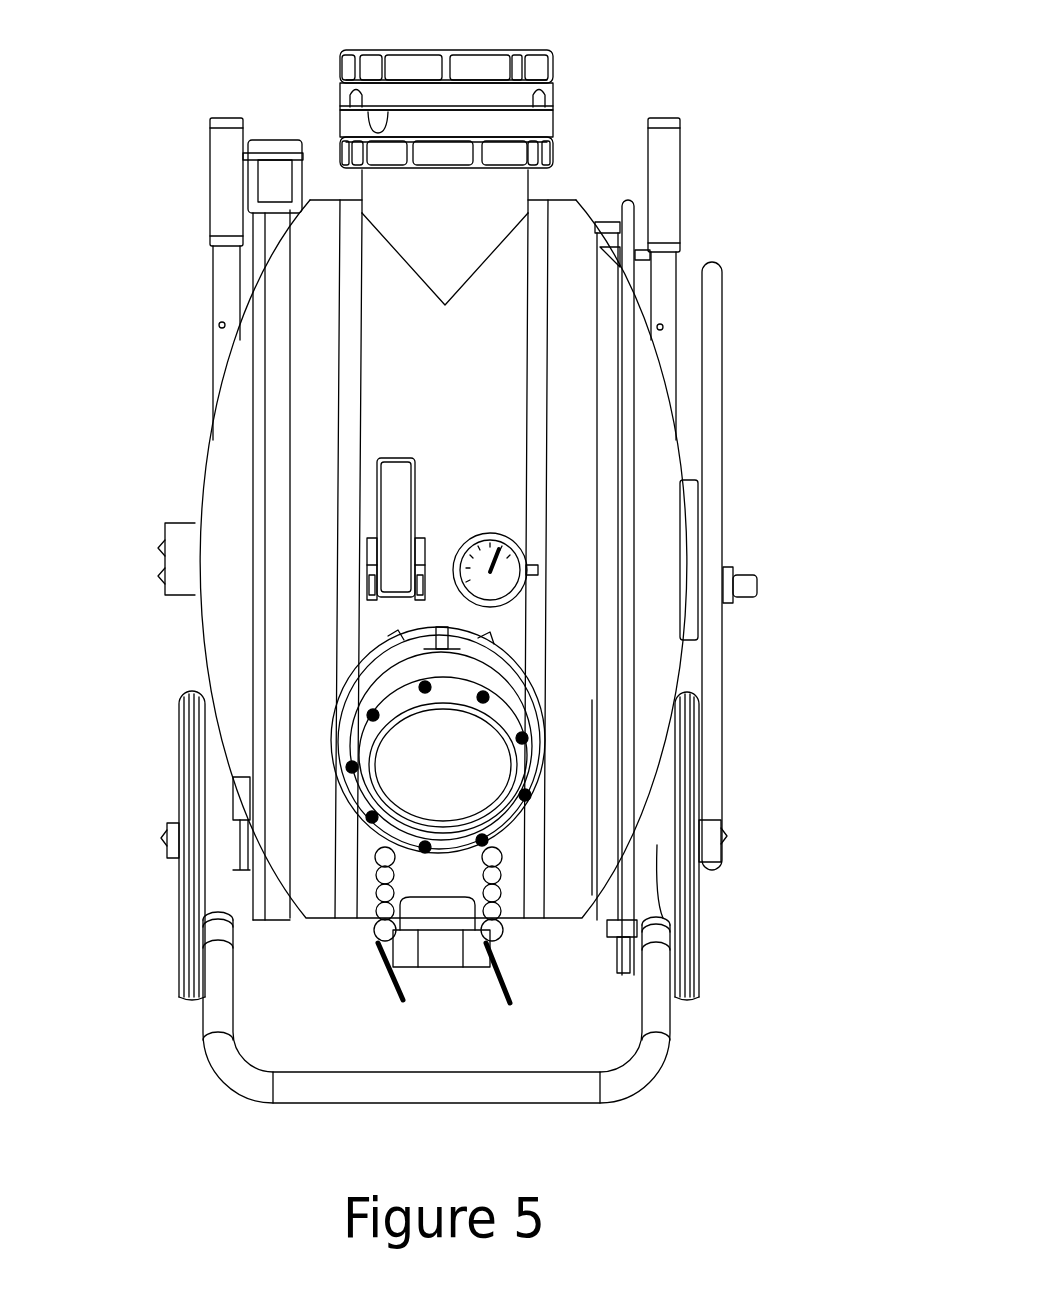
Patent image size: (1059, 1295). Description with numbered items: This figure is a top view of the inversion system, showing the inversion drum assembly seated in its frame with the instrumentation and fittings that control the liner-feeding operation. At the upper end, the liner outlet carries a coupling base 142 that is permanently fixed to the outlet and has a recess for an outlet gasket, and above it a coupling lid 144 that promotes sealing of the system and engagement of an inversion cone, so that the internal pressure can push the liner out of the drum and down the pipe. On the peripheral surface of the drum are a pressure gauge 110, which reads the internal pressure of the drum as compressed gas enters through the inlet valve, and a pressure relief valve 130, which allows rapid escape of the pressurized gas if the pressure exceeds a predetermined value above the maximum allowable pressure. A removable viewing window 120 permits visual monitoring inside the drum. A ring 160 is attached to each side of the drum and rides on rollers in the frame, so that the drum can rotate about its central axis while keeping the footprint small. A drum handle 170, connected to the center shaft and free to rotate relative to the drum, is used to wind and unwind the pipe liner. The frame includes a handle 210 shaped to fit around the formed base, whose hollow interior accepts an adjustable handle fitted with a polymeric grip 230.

The pressure gauge 110 is at (545, 571).
The removable viewing window 120 is at (335, 700).
The pressure relief valve 130 is at (375, 530).
The coupling base 142 is at (562, 123).
The coupling lid 144 is at (562, 66).
The ring 160 is at (254, 437).
The drum handle 170 is at (727, 318).
The handle 210 is at (202, 1040).
The grip 230 is at (208, 185).